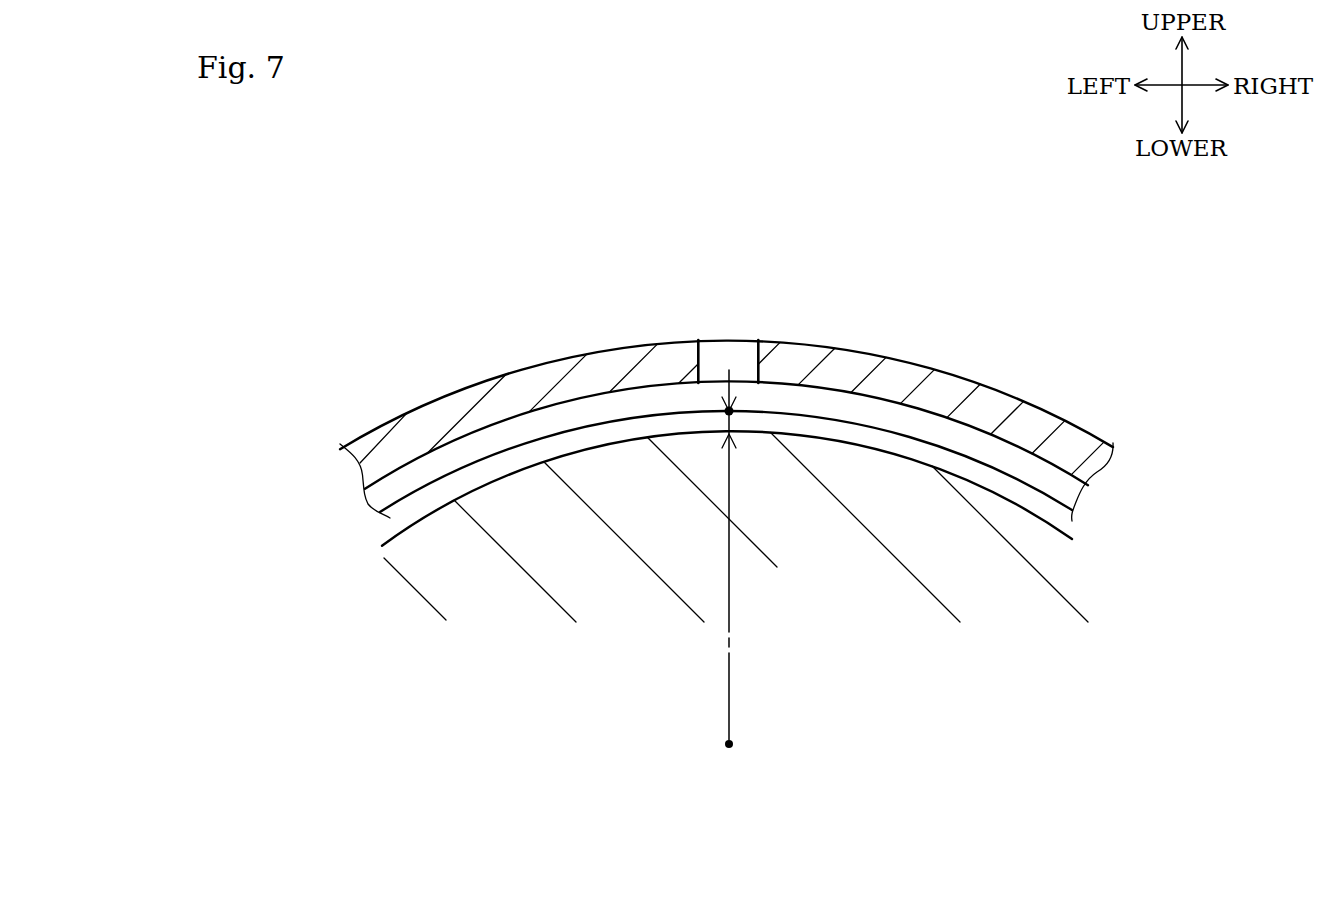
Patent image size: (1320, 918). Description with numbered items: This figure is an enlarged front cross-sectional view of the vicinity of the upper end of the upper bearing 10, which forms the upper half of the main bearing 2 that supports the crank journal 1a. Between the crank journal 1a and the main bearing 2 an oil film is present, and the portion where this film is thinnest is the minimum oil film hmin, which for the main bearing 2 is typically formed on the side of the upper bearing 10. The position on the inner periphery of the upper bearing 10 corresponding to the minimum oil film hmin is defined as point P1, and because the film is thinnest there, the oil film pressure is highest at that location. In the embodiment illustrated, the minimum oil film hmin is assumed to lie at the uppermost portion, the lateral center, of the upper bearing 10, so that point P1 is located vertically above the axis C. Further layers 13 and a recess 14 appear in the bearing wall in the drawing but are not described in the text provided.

The main bearing 2 is at (352, 294).
The upper bearing 10 is at (522, 357).
The bearing lining layer 13 is at (916, 408).
The oil groove / recess 14 is at (760, 353).
The crank journal 1a is at (826, 603).
The point P1 is at (726, 410).
The minimum oil film hmin is at (753, 501).
The axis C is at (727, 708).